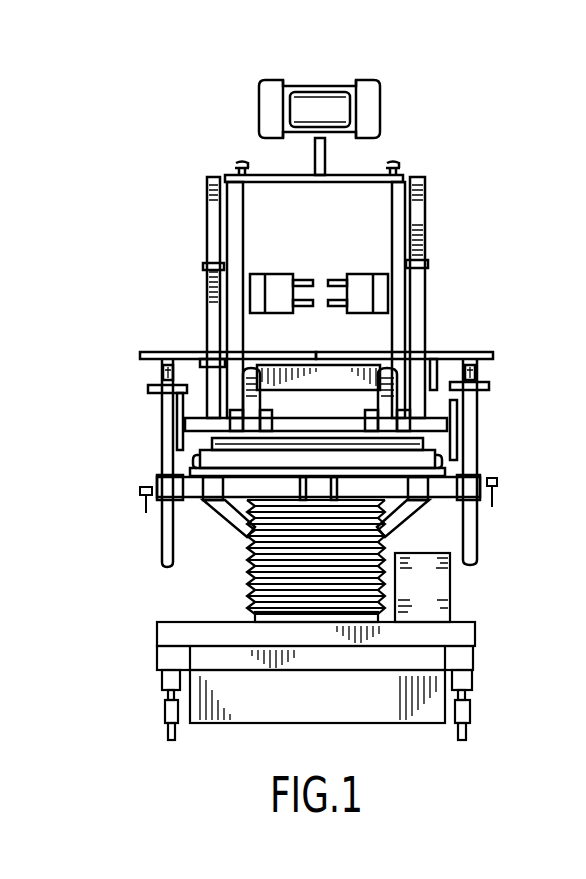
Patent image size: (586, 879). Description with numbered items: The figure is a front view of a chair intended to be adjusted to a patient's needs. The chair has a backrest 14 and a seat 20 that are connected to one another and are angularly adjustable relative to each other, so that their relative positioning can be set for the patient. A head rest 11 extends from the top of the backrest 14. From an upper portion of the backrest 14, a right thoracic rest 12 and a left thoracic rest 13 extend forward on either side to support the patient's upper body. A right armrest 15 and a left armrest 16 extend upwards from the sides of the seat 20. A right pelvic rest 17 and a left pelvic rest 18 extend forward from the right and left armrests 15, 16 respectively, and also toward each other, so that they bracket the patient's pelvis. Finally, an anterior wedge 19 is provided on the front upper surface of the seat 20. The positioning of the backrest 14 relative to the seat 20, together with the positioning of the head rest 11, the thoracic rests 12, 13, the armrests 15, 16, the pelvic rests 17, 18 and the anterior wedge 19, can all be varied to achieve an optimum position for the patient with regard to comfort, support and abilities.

The head rest 11 is at (357, 80).
The right thoracic rest 12 is at (277, 292).
The left thoracic rest 13 is at (363, 292).
The backrest 14 is at (405, 177).
The right armrest 15 is at (153, 354).
The left armrest 16 is at (488, 352).
The right pelvic rest 17 is at (222, 405).
The left pelvic rest 18 is at (378, 408).
The anterior wedge 19 is at (242, 445).
The seat 20 is at (423, 457).